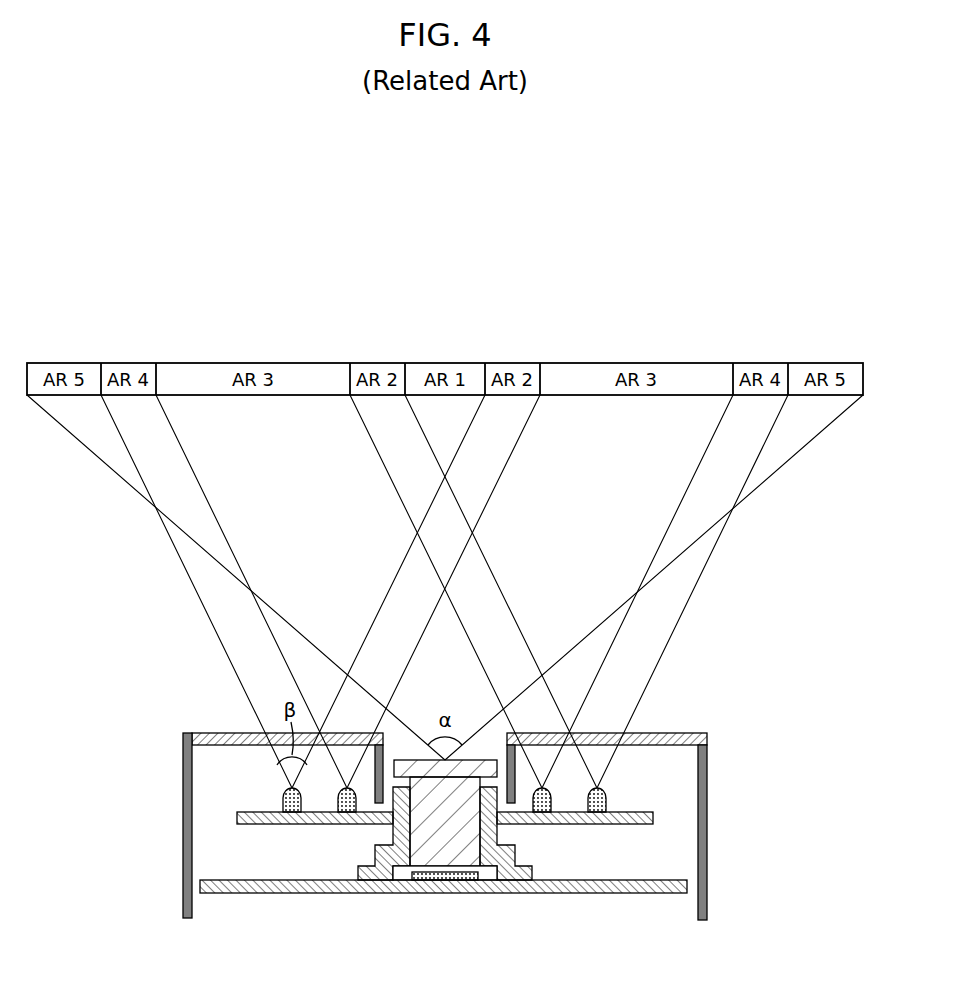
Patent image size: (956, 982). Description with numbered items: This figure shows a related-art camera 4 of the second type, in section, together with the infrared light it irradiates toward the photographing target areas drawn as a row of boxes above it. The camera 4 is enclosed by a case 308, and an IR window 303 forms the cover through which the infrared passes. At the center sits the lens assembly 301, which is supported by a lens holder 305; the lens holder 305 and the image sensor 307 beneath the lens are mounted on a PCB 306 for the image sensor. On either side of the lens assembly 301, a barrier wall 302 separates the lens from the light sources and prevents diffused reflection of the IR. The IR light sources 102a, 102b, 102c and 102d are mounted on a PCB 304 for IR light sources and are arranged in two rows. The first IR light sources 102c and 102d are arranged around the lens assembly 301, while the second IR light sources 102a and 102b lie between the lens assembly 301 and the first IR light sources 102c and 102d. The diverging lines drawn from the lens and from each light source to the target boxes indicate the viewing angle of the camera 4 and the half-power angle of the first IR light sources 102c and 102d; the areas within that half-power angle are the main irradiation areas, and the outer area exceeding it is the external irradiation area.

The camera 4 is at (718, 682).
The lens assembly 301 is at (426, 827).
The barrier wall 302 is at (385, 812).
The IR window 303 is at (210, 733).
The PCB for IR light sources 304 is at (641, 825).
The lens holder 305 is at (510, 880).
The PCB for an image sensor 306 is at (587, 893).
The image sensor 307 is at (445, 880).
The case 308 is at (183, 836).
The second IR light source 102a is at (347, 812).
The second IR light source 102b is at (544, 812).
The first IR light source 102c is at (292, 812).
The first IR light source 102d is at (603, 792).